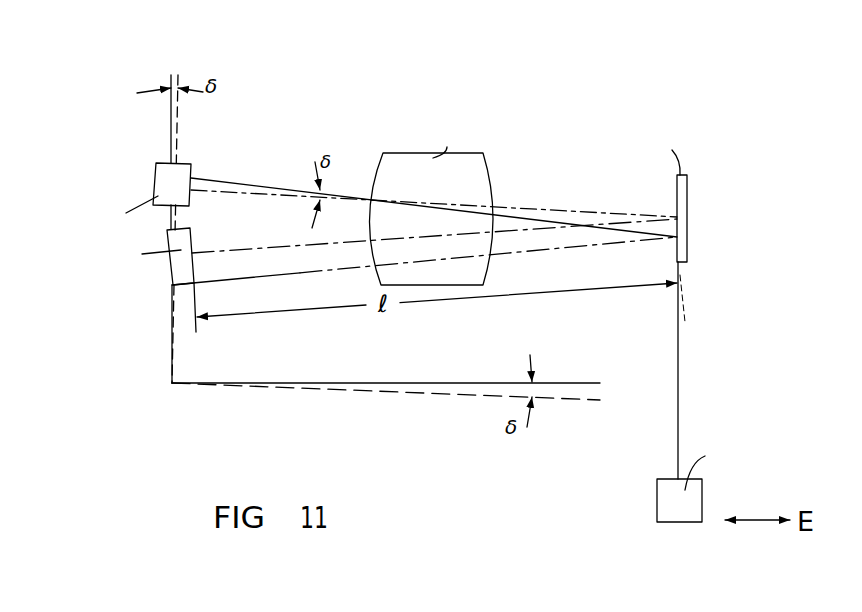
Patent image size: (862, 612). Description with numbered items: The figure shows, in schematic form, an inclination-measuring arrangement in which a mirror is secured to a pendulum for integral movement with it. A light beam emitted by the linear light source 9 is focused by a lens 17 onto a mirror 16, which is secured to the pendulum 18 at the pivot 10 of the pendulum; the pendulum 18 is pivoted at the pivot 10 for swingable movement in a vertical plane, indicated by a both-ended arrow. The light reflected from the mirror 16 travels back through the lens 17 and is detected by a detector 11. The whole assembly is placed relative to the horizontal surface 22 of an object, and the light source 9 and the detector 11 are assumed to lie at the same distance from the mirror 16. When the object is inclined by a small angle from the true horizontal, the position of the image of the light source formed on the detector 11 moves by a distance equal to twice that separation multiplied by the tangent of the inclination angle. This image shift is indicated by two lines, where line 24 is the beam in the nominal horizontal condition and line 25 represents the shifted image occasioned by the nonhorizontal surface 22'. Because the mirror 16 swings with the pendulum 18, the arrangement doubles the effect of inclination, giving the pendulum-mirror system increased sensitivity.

The linear light source 9 is at (156, 176).
The detector 11 is at (168, 260).
The pivot 10 is at (676, 216).
The beam in the nominal horizontal condition 24 is at (281, 248).
The image shift beam 25 is at (307, 272).
The lens 17 is at (418, 288).
The mirror 16 is at (687, 235).
The pendulum 18 is at (657, 497).
The horizontal surface 22 is at (389, 364).
The nonhorizontal surface 22' is at (395, 408).